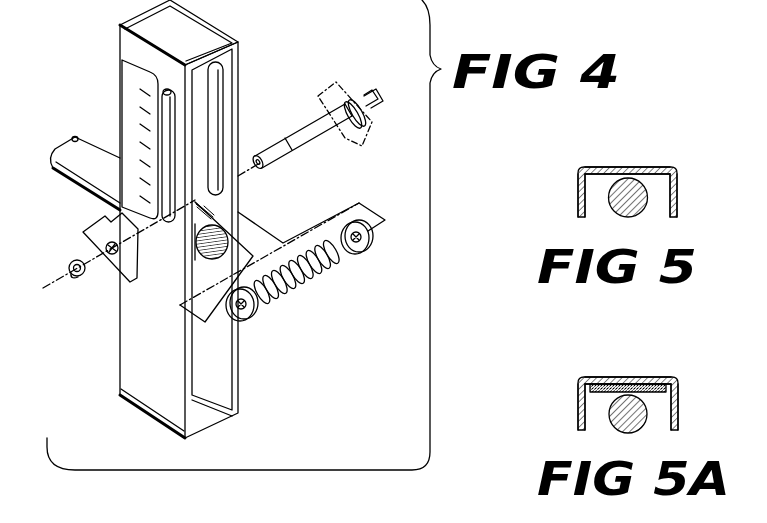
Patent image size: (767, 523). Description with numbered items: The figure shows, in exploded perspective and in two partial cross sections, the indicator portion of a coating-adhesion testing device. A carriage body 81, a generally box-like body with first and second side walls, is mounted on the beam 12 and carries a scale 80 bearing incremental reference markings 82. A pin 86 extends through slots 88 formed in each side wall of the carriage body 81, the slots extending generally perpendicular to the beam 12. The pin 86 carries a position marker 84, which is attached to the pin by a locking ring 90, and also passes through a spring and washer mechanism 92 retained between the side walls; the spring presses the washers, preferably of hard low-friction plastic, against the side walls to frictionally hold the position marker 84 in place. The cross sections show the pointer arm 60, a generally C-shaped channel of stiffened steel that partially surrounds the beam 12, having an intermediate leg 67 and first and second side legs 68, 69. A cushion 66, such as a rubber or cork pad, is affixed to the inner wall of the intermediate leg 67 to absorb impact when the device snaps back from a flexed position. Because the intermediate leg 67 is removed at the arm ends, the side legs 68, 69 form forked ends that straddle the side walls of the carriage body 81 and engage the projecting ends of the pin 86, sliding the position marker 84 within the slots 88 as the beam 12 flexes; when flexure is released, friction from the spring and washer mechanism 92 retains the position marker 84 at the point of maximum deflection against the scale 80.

In FIG. 4, the beam 12 is at (70, 155).
In FIG. 5, the beam 12 is at (620, 212).
In FIG. 5A, the beam 12 is at (618, 430).
In FIG. 5, the pointer arm 60 is at (623, 168).
In FIG. 5A, the pointer arm 60 is at (625, 382).
In FIG. 5A, the cushion 66 is at (610, 385).
In FIG. 5, the intermediate leg 67 is at (641, 166).
In FIG. 5A, the intermediate leg 67 is at (626, 376).
In FIG. 5, the first side leg 68 is at (577, 190).
In FIG. 5A, the first side leg 68 is at (577, 410).
In FIG. 5, the second side leg 69 is at (675, 168).
In FIG. 5A, the second side leg 69 is at (679, 410).
In FIG. 4, the scale 80 is at (125, 67).
In FIG. 4, the carriage body 81 is at (122, 363).
In FIG. 4, the incremental reference markings 82 is at (122, 105).
In FIG. 4, the position marker 84 is at (108, 262).
In FIG. 4, the pin 86 is at (302, 132).
In FIG. 4, the slots 88 is at (167, 89).
In FIG. 4, the locking ring 90 is at (72, 262).
In FIG. 4, the spring and washer mechanism 92 is at (305, 284).